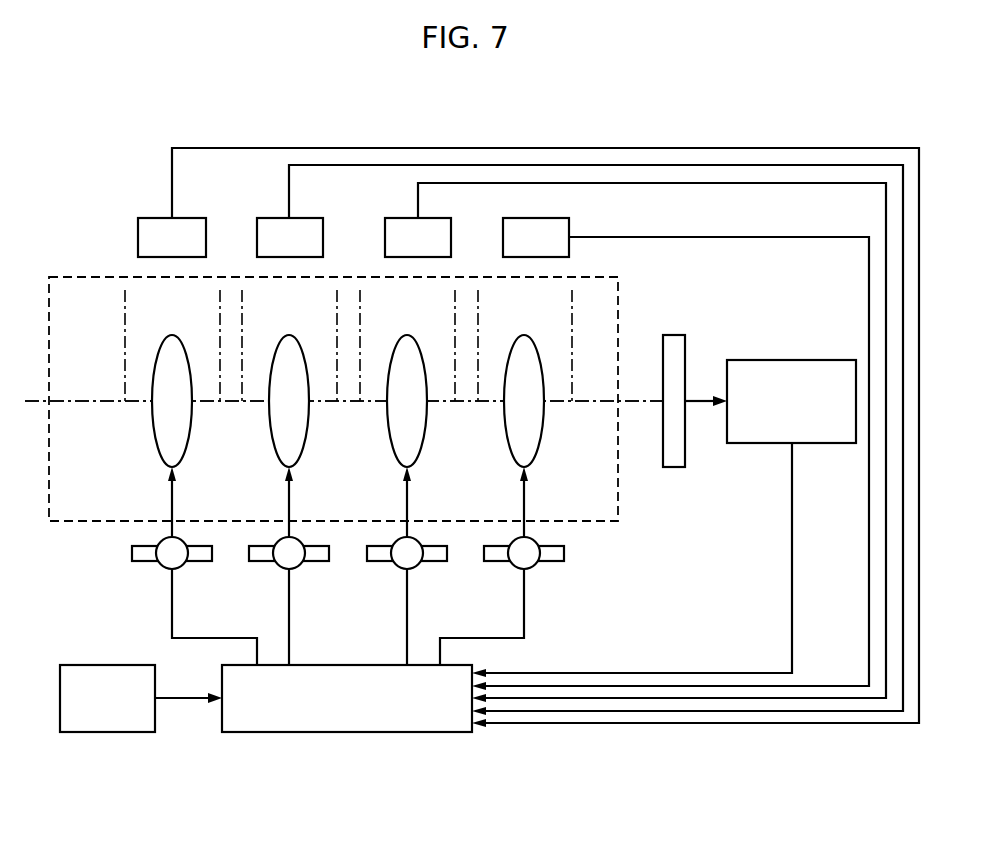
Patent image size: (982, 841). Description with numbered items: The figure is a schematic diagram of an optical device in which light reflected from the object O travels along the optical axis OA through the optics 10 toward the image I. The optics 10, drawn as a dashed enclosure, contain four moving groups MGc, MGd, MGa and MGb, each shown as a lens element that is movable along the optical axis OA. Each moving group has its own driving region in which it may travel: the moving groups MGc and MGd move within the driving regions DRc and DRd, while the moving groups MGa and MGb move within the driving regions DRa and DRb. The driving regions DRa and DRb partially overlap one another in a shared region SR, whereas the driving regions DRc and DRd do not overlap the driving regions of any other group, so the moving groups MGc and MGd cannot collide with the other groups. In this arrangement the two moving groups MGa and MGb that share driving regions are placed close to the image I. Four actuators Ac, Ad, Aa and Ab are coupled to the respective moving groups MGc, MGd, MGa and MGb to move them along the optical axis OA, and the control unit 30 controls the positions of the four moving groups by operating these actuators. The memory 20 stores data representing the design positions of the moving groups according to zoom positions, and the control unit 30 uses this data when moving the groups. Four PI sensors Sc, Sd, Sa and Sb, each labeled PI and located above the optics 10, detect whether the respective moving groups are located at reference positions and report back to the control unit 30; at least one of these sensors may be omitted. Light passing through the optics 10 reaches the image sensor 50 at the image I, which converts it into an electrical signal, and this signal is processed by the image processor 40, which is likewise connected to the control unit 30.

The optics 10 is at (570, 276).
The memory 20 is at (107, 735).
The control unit 30 is at (347, 735).
The image processor 40 is at (792, 359).
The image sensor 50 is at (688, 352).
The object O is at (333, 401).
The optical axis OA is at (88, 398).
The image I is at (653, 420).
The moving group MGa is at (392, 447).
The moving group MGb is at (509, 447).
The moving group MGc is at (157, 447).
The moving group MGd is at (274, 447).
The actuator Aa is at (437, 563).
The actuator Ab is at (554, 563).
The actuator Ac is at (202, 563).
The actuator Ad is at (319, 563).
The PI sensor Sa is at (433, 217).
The PI sensor Sb is at (550, 217).
The PI sensor Sc is at (187, 217).
The PI sensor Sd is at (306, 217).
The driving region DRa is at (446, 327).
The driving region DRb is at (563, 310).
The driving region DRc is at (211, 327).
The driving region DRd is at (328, 327).
The shared region SR is at (428, 347).